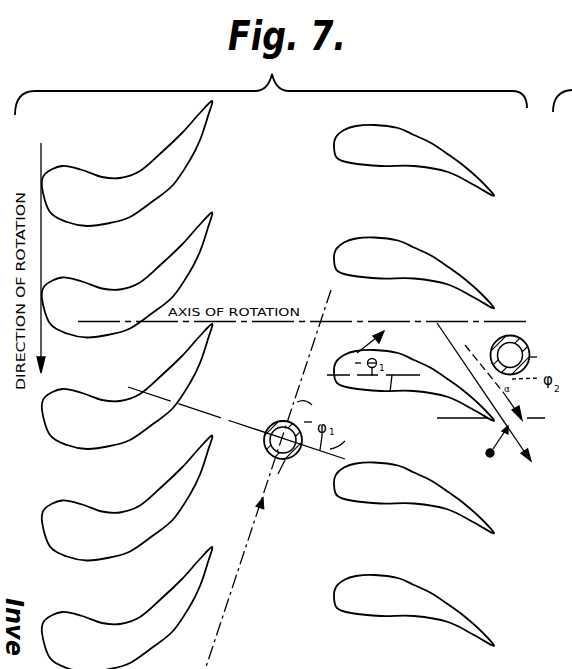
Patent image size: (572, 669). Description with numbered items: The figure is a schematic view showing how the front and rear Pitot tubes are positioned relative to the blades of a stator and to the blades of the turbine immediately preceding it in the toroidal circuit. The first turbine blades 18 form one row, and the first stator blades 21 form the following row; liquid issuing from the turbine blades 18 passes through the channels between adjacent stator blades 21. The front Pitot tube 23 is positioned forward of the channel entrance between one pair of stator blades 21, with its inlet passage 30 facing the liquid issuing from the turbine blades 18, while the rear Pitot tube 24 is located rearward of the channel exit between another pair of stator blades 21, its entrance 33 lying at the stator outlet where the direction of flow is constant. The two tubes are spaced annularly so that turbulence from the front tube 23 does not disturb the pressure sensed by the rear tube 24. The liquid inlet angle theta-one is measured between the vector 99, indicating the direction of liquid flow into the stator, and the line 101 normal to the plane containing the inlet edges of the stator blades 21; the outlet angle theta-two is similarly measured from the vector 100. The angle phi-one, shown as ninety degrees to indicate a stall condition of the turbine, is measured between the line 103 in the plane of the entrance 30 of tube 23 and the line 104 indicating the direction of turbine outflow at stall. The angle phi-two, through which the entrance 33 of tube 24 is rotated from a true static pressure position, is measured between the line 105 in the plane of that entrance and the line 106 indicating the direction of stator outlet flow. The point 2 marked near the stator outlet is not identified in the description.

The first turbine blades 18 is at (98, 213).
The first stator blades 21 is at (385, 163).
The front Pitot tube 23 is at (275, 424).
The rear Pitot tube 24 is at (523, 347).
The inlet passage 30 is at (290, 480).
The entrance 33 is at (543, 361).
The vector 99 is at (362, 352).
The vector 100 is at (520, 450).
The line 101 is at (373, 398).
The line 103 is at (333, 449).
The line 104 is at (251, 548).
The line 105 is at (475, 342).
The line 106 is at (526, 414).
The reference point 2 is at (474, 463).